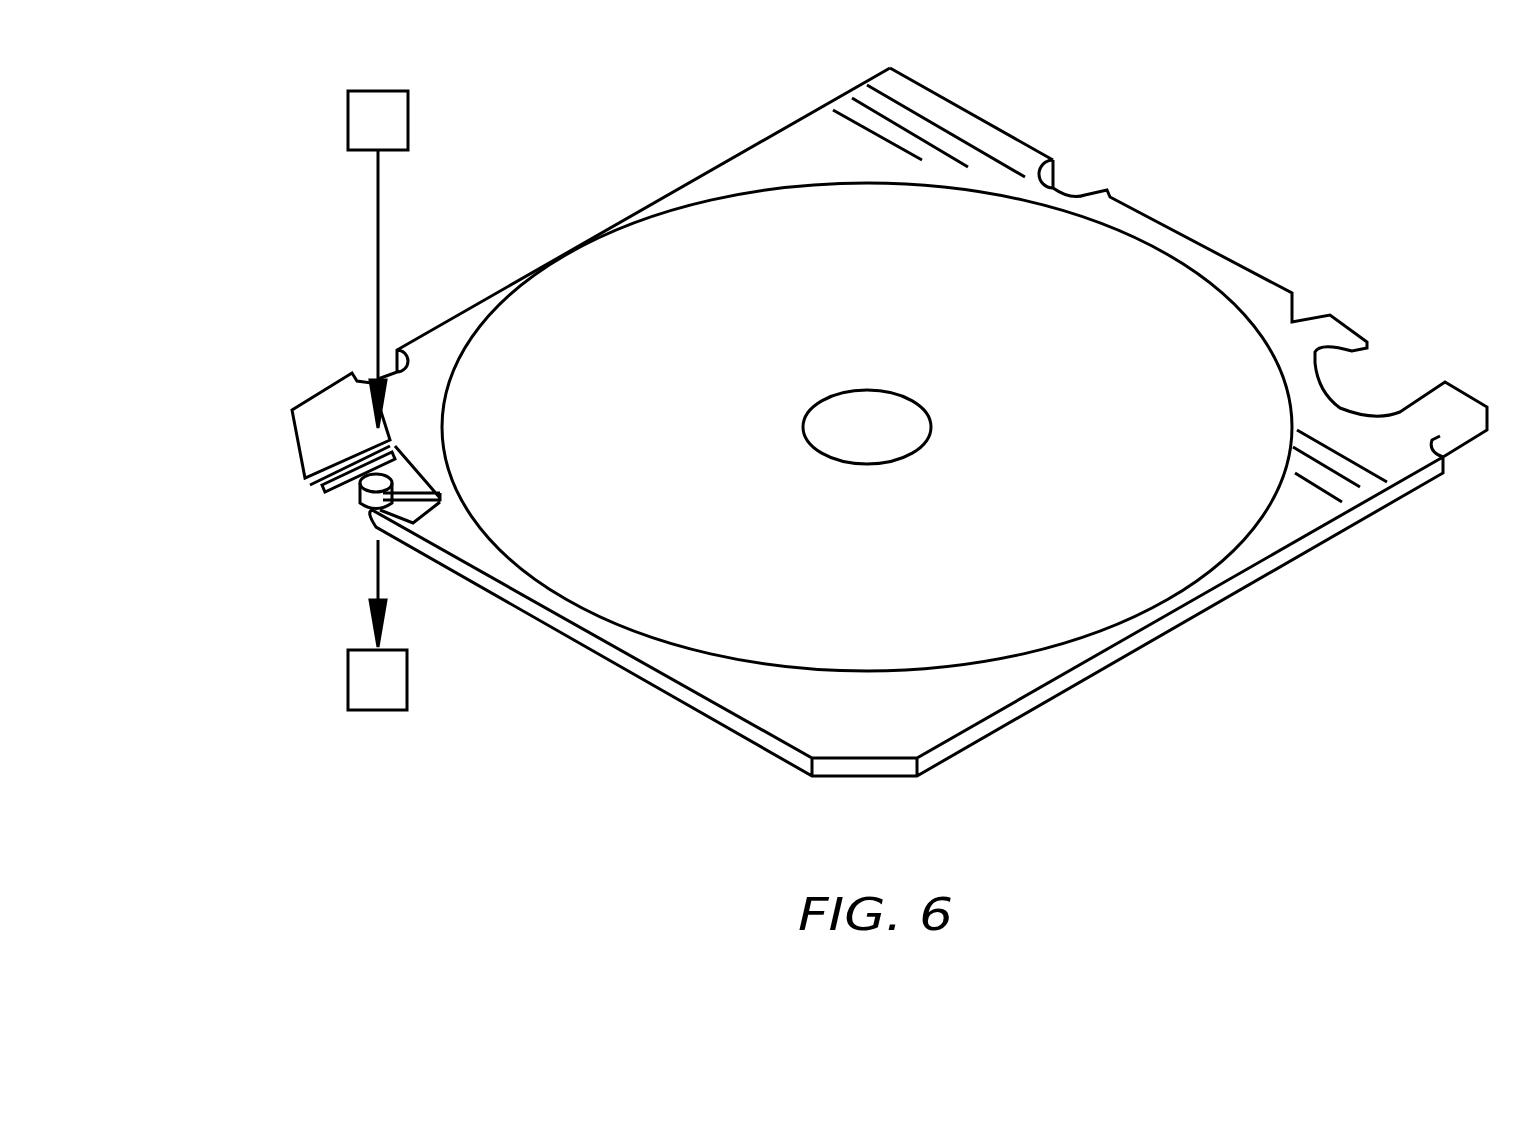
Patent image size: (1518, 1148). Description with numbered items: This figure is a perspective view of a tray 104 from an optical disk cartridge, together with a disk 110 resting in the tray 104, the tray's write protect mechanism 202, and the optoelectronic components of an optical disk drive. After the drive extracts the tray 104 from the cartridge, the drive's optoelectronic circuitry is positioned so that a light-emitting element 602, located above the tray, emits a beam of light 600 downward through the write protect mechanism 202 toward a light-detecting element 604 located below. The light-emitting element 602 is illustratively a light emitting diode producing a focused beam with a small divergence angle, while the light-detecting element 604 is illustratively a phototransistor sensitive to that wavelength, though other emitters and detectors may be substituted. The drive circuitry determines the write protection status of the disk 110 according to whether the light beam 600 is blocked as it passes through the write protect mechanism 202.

The tray 104 is at (1005, 723).
The optical disk 110 is at (1082, 441).
The write protect mechanism 202 is at (305, 535).
The beam of light 600 is at (315, 280).
The light-emitting element 602 is at (348, 118).
The light-detecting element 604 is at (378, 712).